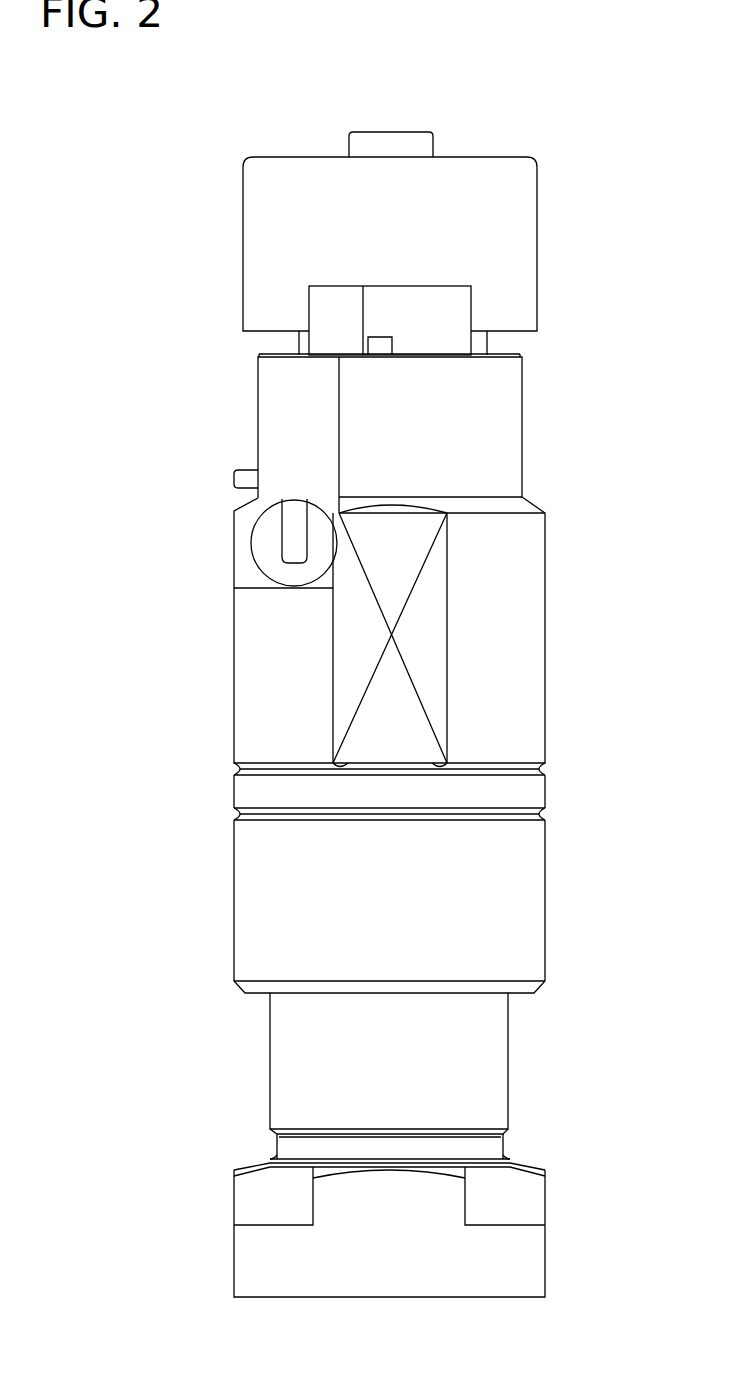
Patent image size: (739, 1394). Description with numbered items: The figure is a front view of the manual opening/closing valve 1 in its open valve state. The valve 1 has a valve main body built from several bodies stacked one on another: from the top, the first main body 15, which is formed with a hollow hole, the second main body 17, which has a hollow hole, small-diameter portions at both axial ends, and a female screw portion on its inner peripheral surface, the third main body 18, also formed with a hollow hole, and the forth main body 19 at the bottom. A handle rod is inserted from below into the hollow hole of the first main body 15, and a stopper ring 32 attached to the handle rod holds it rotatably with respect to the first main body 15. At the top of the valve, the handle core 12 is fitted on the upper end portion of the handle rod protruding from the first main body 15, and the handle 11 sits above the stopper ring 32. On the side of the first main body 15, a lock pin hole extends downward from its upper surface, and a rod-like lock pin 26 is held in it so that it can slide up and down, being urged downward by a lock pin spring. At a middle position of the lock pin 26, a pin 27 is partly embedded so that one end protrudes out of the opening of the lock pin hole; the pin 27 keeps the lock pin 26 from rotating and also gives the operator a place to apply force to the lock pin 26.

The manual opening/closing valve 1 is at (584, 250).
The housing 11 is at (500, 187).
The handle core 12 is at (402, 147).
The first main body 15 is at (537, 569).
The second main body 17 is at (530, 795).
The third main body 18 is at (530, 903).
The forth main body 19 is at (531, 1268).
The lock pin 26 is at (292, 540).
The pin 27 is at (240, 479).
The stopper ring 32 is at (472, 343).